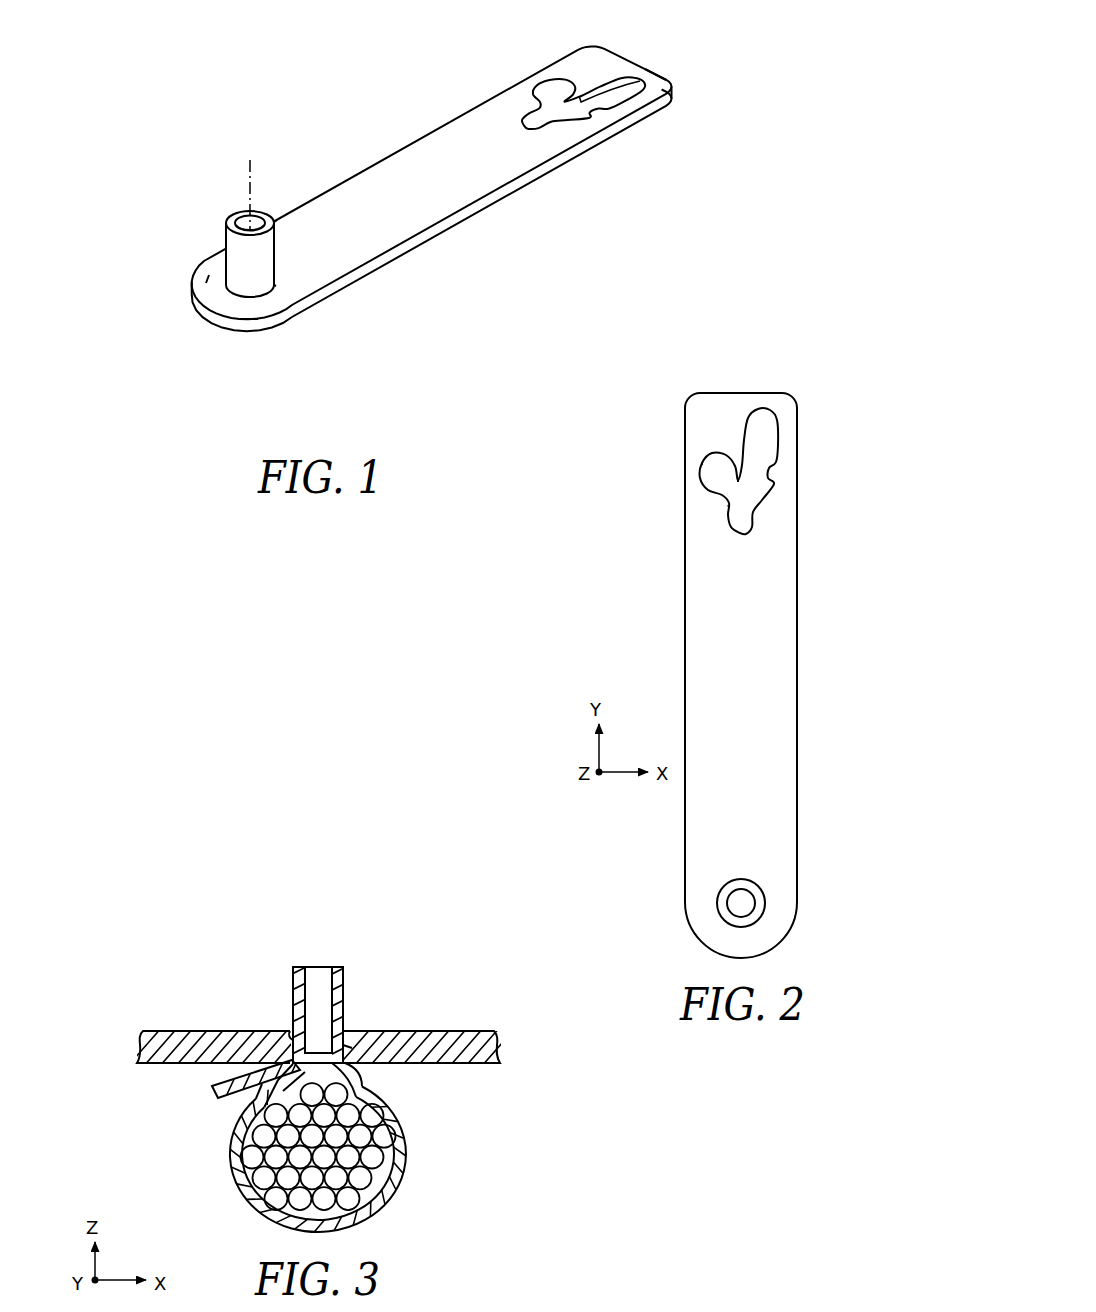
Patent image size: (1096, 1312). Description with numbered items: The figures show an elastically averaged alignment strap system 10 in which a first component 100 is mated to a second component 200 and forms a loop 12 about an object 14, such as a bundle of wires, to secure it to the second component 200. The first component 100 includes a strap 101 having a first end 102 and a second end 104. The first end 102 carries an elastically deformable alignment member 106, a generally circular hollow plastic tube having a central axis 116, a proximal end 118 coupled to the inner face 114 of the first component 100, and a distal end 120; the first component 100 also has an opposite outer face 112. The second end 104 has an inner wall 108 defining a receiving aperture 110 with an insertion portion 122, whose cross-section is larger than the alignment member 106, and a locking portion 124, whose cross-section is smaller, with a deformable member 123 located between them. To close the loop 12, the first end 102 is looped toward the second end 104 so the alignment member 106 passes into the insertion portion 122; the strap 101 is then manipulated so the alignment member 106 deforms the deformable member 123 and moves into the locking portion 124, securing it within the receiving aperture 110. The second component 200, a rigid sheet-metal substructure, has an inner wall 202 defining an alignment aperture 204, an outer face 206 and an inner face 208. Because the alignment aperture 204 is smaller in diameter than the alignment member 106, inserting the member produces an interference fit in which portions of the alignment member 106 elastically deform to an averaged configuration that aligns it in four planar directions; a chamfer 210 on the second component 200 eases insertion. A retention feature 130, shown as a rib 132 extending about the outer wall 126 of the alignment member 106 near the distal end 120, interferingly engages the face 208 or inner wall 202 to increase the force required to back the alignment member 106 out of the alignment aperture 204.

In FIG. 3, the elastically averaged alignment strap system 10 is at (170, 915).
In FIG. 3, the loop 12 is at (245, 1203).
In FIG. 3, the object 14 is at (395, 1120).
In FIG. 1, the first component 100 is at (240, 82).
In FIG. 2, the first component 100 is at (668, 385).
In FIG. 3, the first component 100 is at (210, 1155).
In FIG. 1, the strap 101 is at (414, 128).
In FIG. 2, the strap 101 is at (681, 678).
In FIG. 3, the strap 101 is at (370, 1224).
In FIG. 1, the first end 102 is at (294, 334).
In FIG. 2, the first end 102 is at (811, 888).
In FIG. 3, the first end 102 is at (246, 1105).
In FIG. 1, the second end 104 is at (664, 118).
In FIG. 2, the second end 104 is at (806, 440).
In FIG. 3, the second end 104 is at (233, 1090).
In FIG. 1, the elastically deformable alignment member 106 is at (226, 228).
In FIG. 2, the elastically deformable alignment member 106 is at (718, 887).
In FIG. 3, the elastically deformable alignment member 106 is at (350, 966).
In FIG. 1, the inner wall 108 is at (606, 80).
In FIG. 2, the inner wall 108 is at (772, 478).
In FIG. 1, the receiving aperture 110 is at (582, 86).
In FIG. 2, the receiving aperture 110 is at (733, 455).
In FIG. 1, the outer face 112 is at (257, 333).
In FIG. 1, the inner face 114 is at (206, 283).
In FIG. 2, the inner face 114 is at (760, 645).
In FIG. 1, the central axis 116 is at (249, 186).
In FIG. 1, the proximal end 118 is at (284, 286).
In FIG. 1, the distal end 120 is at (284, 230).
In FIG. 3, the distal end 120 is at (286, 966).
In FIG. 2, the insertion portion 122 is at (771, 440).
In FIG. 2, the deformable member 123 is at (726, 504).
In FIG. 2, the locking portion 124 is at (709, 465).
In FIG. 1, the outer wall 126 is at (265, 268).
In FIG. 3, the outer wall 126 is at (335, 1010).
In FIG. 3, the retention feature 130 is at (288, 1013).
In FIG. 3, the rib 132 is at (346, 1031).
In FIG. 3, the second component 200 is at (504, 1048).
In FIG. 3, the inner wall 202 is at (290, 1032).
In FIG. 3, the alignment aperture 204 is at (352, 1048).
In FIG. 3, the outer face 206 is at (483, 1063).
In FIG. 3, the inner face 208 is at (483, 1031).
In FIG. 3, the chamfer 210 is at (386, 1094).